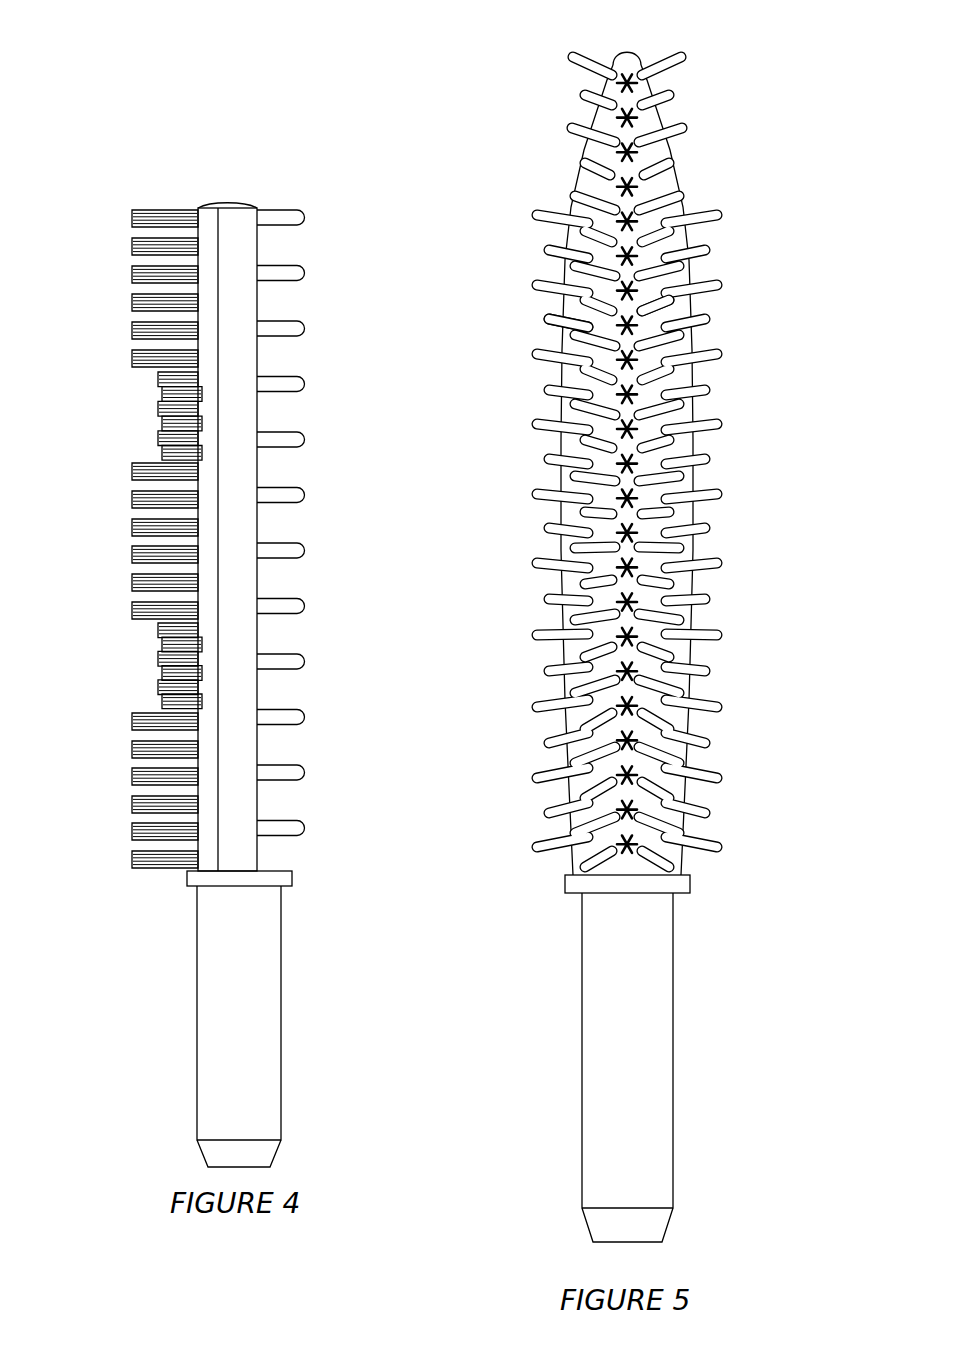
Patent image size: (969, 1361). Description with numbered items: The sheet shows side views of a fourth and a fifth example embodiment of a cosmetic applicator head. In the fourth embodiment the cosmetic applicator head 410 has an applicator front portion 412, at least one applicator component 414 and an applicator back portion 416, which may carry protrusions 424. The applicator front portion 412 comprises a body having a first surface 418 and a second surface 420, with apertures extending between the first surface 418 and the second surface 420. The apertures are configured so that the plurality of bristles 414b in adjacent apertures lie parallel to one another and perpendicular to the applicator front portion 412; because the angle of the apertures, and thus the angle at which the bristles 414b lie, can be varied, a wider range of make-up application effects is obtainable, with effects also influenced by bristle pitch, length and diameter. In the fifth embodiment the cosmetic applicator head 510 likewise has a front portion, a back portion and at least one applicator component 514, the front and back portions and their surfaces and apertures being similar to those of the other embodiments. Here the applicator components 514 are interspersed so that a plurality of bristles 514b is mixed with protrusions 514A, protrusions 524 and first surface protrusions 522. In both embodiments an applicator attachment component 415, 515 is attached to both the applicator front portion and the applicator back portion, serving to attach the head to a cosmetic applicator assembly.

In FIG. 4, the cosmetic applicator head 410 is at (243, 627).
In FIG. 4, the applicator front portion 412 is at (207, 206).
In FIG. 4, the applicator back portion 416 is at (241, 206).
In FIG. 4, the second surface 420 is at (220, 477).
In FIG. 4, the applicator component 414 is at (111, 539).
In FIG. 4, the bristles 414b is at (140, 582).
In FIG. 4, the first surface 418 is at (193, 460).
In FIG. 4, the protrusions 424 is at (307, 553).
In FIG. 4, the applicator attachment component 415 is at (281, 1122).
In FIG. 5, the cosmetic applicator head 510 is at (625, 631).
In FIG. 5, the applicator components 514 is at (540, 210).
In FIG. 5, the protrusions 514A is at (588, 313).
In FIG. 5, the bristles 514b is at (637, 152).
In FIG. 5, the protrusions 524 is at (660, 307).
In FIG. 5, the first surface protrusions 522 is at (690, 877).
In FIG. 5, the applicator attachment component 515 is at (673, 1082).